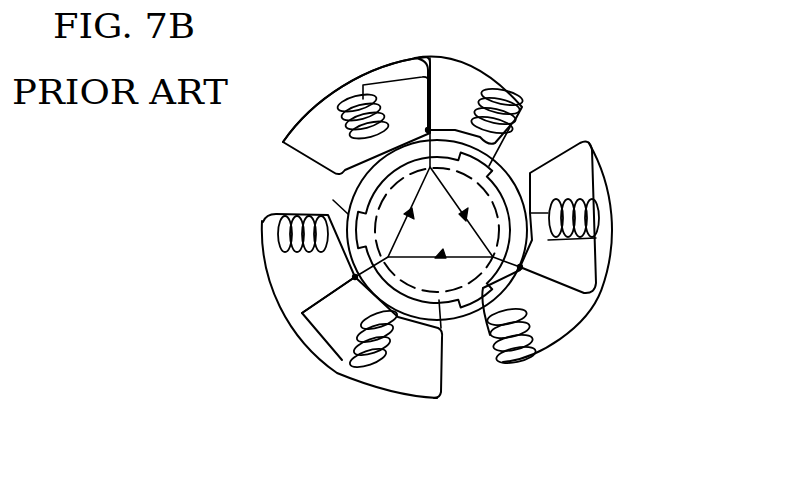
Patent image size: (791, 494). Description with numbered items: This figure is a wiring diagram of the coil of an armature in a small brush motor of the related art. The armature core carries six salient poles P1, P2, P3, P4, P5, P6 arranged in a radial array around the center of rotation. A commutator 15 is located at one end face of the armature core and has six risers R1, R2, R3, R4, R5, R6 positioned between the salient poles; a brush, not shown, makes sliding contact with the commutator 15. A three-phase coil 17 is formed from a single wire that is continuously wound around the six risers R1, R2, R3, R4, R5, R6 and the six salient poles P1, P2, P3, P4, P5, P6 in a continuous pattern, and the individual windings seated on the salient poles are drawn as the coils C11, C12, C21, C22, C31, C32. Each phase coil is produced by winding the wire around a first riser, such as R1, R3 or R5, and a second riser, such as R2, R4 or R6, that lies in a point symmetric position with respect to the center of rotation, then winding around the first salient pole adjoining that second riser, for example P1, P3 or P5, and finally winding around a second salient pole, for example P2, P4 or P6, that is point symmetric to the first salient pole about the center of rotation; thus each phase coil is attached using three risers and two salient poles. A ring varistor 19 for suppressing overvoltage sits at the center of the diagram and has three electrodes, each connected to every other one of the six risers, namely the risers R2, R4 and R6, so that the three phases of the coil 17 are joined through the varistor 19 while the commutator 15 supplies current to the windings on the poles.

The salient pole P1 is at (363, 387).
The salient pole P2 is at (513, 74).
The salient pole P3 is at (328, 84).
The salient pole P4 is at (537, 368).
The salient pole P5 is at (624, 213).
The salient pole P6 is at (260, 242).
The riser R1 is at (492, 161).
The riser R2 is at (525, 268).
The riser R3 is at (439, 302).
The riser R4 is at (336, 295).
The riser R5 is at (350, 205).
The riser R6 is at (431, 100).
The coil C11 is at (389, 364).
The coil C12 is at (521, 123).
The coil C21 is at (338, 112).
The coil C22 is at (492, 352).
The coil C31 is at (561, 199).
The coil C32 is at (278, 213).
The commutator 15 is at (355, 277).
The three-phase coil 17 is at (330, 368).
The ring varistor 19 is at (391, 216).